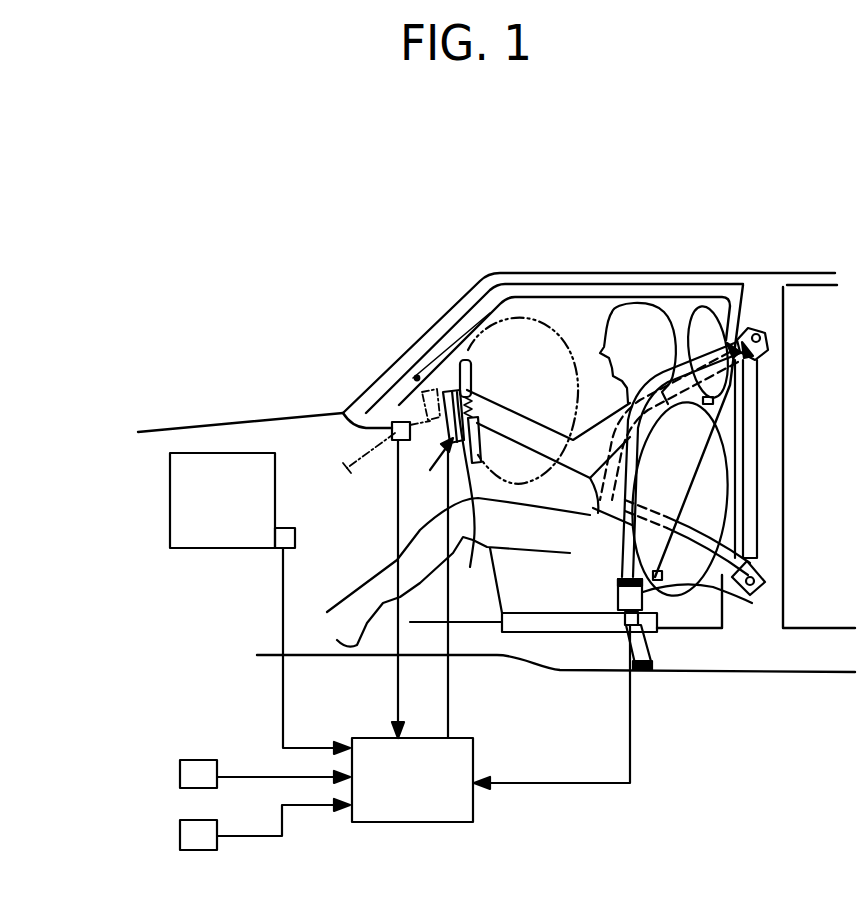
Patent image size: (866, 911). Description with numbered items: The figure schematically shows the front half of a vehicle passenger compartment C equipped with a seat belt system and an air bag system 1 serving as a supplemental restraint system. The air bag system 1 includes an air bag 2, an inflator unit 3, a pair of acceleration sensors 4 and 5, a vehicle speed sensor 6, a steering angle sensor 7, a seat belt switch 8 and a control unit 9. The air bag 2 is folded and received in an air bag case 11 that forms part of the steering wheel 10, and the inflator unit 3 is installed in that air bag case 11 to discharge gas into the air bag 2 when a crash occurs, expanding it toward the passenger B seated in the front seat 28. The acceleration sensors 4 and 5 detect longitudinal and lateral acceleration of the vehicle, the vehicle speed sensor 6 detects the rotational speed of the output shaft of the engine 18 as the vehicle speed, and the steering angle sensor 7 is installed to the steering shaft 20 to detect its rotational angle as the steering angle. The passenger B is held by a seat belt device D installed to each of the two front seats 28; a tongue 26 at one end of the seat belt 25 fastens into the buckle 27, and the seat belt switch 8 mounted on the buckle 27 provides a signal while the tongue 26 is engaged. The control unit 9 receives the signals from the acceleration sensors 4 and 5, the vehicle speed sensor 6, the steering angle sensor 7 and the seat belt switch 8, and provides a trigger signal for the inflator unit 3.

The air bag system 1 is at (582, 316).
The air bag 2 is at (548, 318).
The inflator unit 3 is at (455, 393).
The acceleration sensor 4 is at (180, 774).
The acceleration sensor 5 is at (180, 834).
The vehicle speed sensor 6 is at (295, 538).
The steering angle sensor 7 is at (352, 426).
The seat belt switch 8 is at (625, 622).
The control unit 9 is at (410, 822).
The steering wheel 10 is at (503, 273).
The air bag case 11 is at (470, 496).
The engine 18 is at (222, 500).
The steering shaft 20 is at (407, 368).
The seat belt 25 is at (699, 538).
The tongue 26 is at (648, 592).
The buckle 27 is at (617, 607).
The front seat 28 is at (691, 466).
The passenger B is at (598, 391).
The passenger compartment C is at (758, 266).
The seat belt device D is at (625, 680).